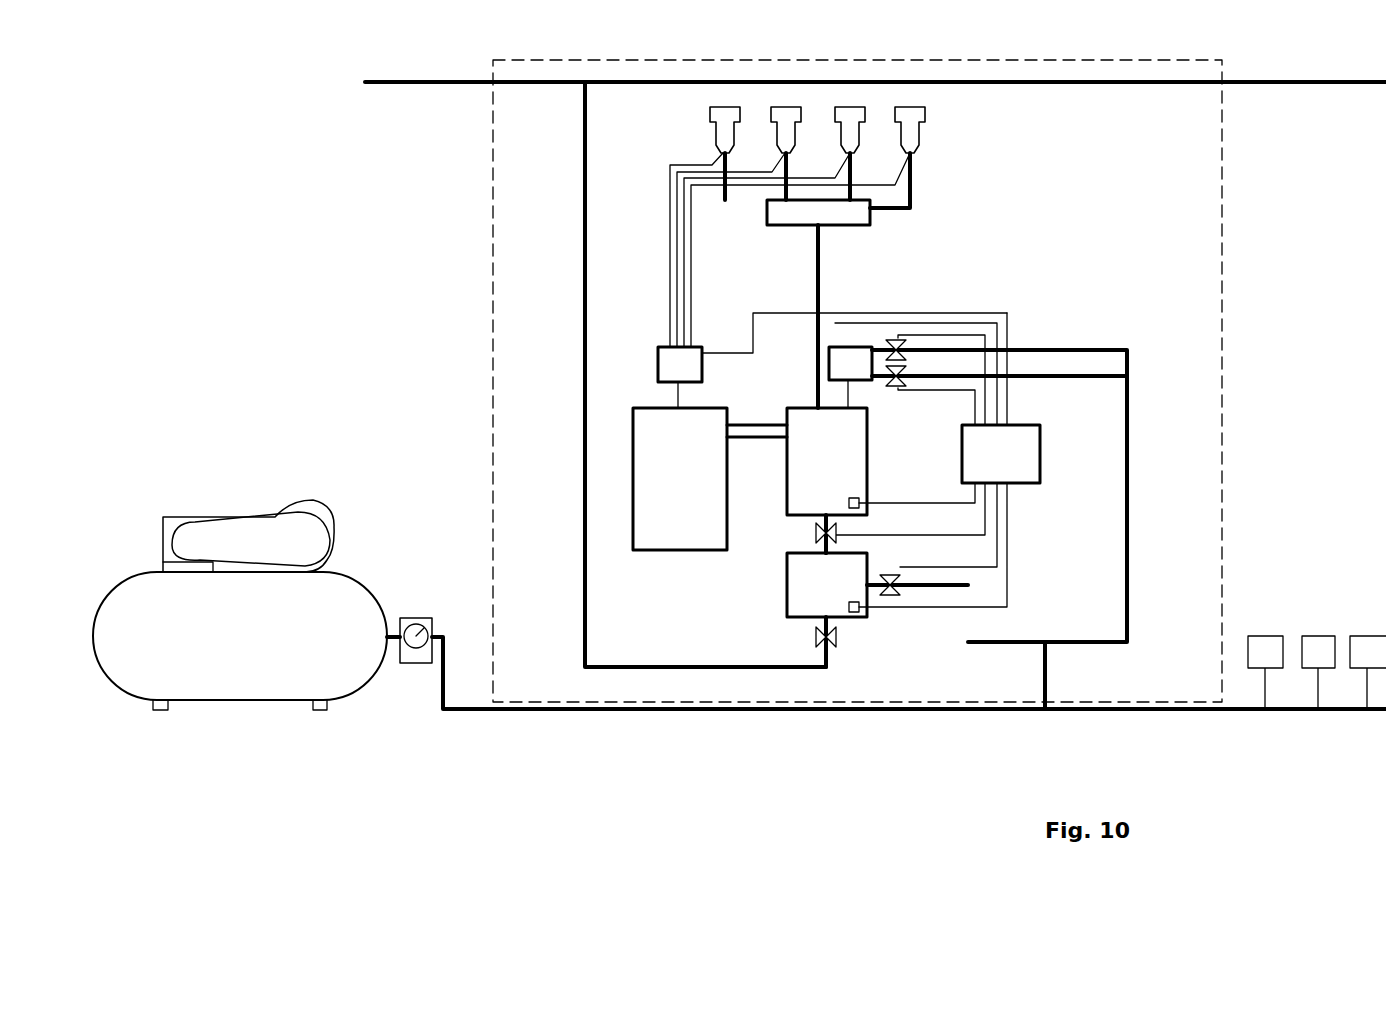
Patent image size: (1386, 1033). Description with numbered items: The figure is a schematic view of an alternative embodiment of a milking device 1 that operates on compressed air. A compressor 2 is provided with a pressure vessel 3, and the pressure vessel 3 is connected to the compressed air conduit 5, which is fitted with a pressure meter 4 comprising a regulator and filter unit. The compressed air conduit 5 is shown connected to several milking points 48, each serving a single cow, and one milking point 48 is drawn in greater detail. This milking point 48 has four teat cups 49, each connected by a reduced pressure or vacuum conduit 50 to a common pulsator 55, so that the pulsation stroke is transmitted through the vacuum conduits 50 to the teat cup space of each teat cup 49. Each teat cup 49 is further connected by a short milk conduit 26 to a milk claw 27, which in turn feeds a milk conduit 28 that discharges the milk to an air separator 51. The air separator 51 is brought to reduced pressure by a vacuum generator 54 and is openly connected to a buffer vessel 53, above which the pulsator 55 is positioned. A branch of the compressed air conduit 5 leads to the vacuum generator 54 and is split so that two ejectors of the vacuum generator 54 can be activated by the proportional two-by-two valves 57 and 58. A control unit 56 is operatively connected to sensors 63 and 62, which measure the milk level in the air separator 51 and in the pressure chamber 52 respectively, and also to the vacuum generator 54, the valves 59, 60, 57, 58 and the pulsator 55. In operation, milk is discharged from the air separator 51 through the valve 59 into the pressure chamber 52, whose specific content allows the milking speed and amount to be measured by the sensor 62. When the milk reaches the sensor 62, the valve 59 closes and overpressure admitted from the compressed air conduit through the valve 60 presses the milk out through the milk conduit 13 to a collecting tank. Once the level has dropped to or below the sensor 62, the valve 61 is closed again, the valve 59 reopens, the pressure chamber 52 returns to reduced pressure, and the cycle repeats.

The milking device 1 is at (300, 188).
The compressor 2 is at (200, 476).
The pressure vessel 3 is at (232, 670).
The pressure meter 4 is at (407, 668).
The compressed air conduit 5 is at (468, 713).
The milk conduit 13 is at (585, 102).
The short milk conduit 26 is at (728, 186).
The milk claw 27 is at (832, 208).
The milk conduit 28 is at (815, 264).
The milking point 48 is at (491, 316).
The teat cup 49 is at (737, 148).
The vacuum conduit 50 is at (691, 220).
The air separator 51 is at (812, 497).
The pressure chamber 52 is at (800, 601).
The buffer vessel 53 is at (652, 453).
The vacuum generator 54 is at (857, 358).
The pulsator 55 is at (666, 357).
The control unit 56 is at (1018, 440).
The proportional 2/2 valve 57 is at (899, 341).
The proportional 2/2 valve 58 is at (904, 372).
The valve 59 is at (822, 549).
The valve 60 is at (892, 593).
The valve 61 is at (818, 640).
The sensor 62 is at (857, 614).
The sensor 63 is at (816, 532).